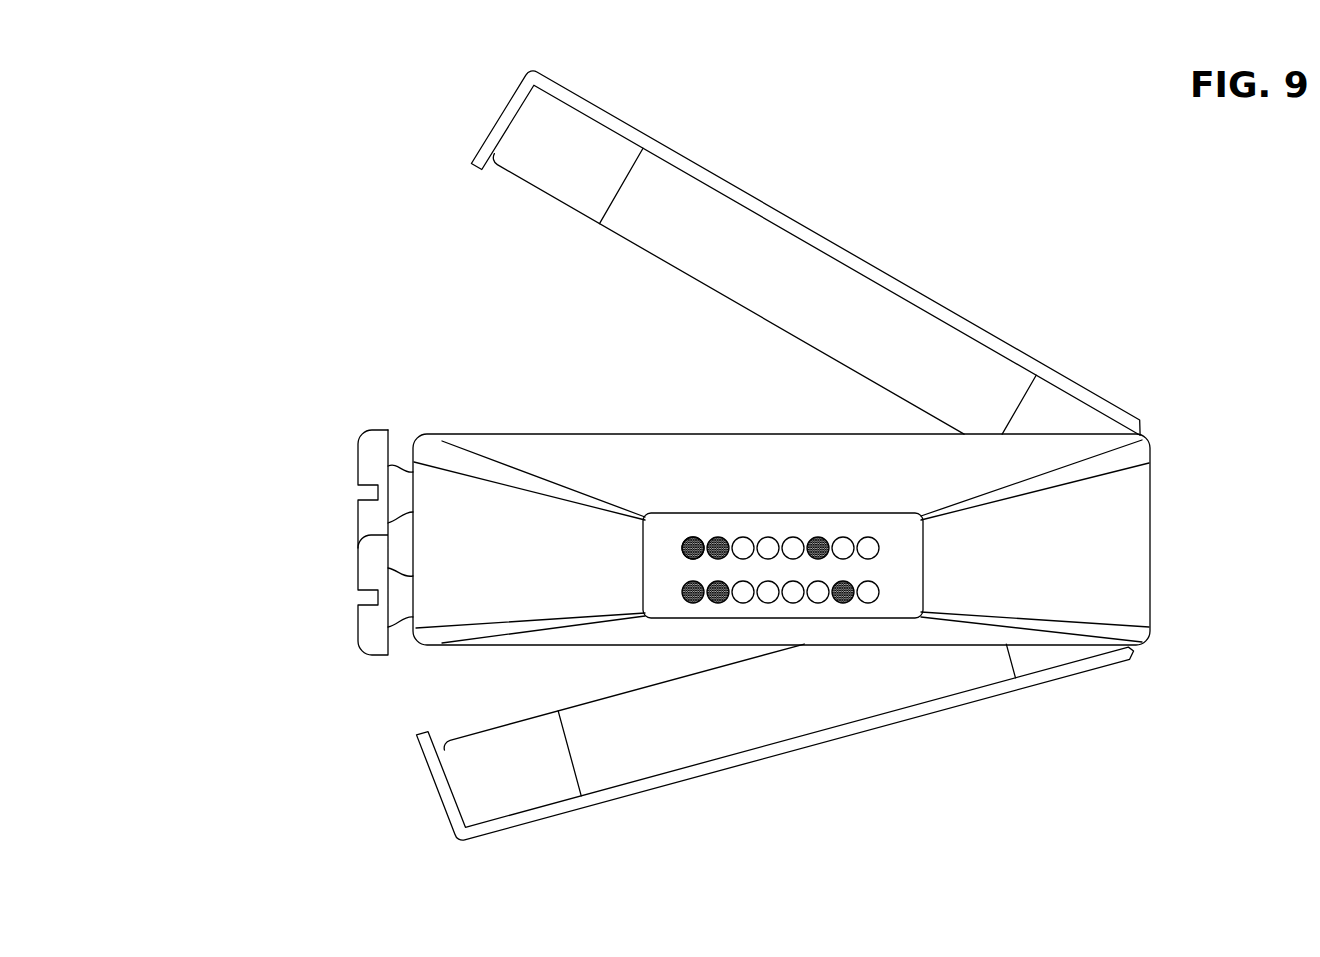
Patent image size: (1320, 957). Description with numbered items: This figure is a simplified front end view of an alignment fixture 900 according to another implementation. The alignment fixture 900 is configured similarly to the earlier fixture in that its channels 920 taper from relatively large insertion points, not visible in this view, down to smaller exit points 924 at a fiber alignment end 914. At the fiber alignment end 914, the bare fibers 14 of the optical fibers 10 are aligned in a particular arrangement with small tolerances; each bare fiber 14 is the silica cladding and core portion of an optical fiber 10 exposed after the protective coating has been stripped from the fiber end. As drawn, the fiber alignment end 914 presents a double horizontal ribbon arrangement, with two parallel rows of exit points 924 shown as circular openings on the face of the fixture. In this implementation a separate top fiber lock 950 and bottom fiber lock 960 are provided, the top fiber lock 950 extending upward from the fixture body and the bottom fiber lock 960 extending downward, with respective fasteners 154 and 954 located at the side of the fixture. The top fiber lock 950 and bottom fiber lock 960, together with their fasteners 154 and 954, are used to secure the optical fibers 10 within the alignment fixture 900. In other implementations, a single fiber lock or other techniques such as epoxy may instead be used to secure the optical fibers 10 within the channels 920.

The alignment fixture 900 is at (332, 221).
The top fiber lock 950 is at (871, 265).
The bottom fiber lock 960 is at (829, 736).
The fastener 154 is at (360, 468).
The fastener 954 is at (360, 573).
The fiber alignment end 914 is at (753, 522).
The channels 920 is at (711, 598).
The exit points 924 is at (698, 539).
The bare fiber 14 is at (693, 538).
The optical fiber 10 is at (679, 529).